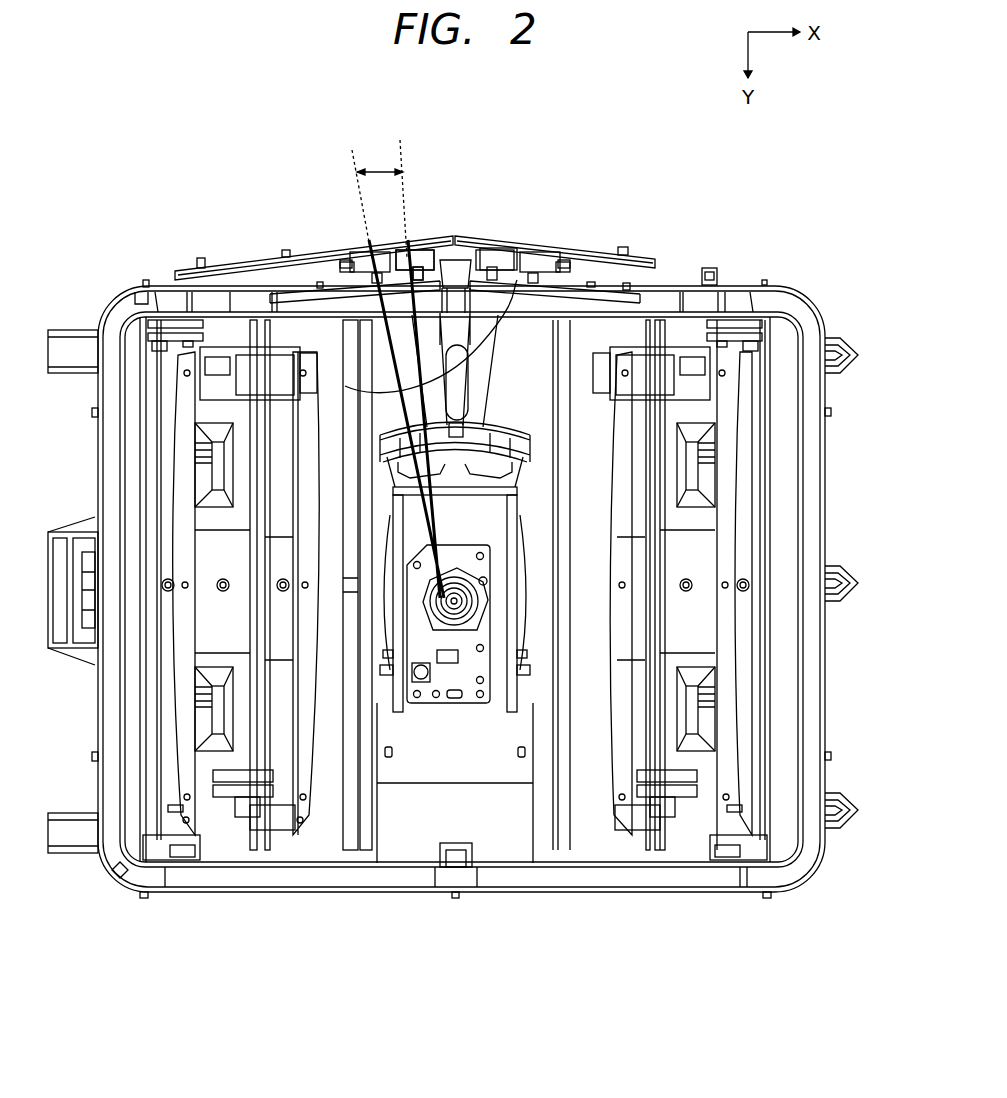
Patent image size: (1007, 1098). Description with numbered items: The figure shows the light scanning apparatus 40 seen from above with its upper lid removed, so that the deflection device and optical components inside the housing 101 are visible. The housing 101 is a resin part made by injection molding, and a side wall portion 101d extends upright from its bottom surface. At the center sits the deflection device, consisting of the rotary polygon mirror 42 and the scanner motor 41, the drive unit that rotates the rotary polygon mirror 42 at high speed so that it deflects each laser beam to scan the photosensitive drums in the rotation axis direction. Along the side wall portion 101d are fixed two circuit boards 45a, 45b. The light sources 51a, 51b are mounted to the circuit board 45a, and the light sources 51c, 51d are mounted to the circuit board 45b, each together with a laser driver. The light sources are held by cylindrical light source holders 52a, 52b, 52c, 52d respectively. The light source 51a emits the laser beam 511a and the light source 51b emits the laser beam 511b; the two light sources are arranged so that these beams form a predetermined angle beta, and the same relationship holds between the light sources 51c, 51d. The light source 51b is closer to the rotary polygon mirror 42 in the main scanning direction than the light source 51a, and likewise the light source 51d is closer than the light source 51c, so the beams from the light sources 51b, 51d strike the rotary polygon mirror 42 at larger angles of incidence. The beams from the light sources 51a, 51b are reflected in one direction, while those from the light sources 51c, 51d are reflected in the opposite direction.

The light scanning apparatus 40 is at (731, 194).
The scanner motor 41 is at (437, 622).
The rotary polygon mirror 42 is at (470, 628).
The circuit board 45a is at (192, 267).
The circuit board 45b is at (648, 253).
The light source 51a is at (375, 251).
The light source 51b is at (415, 252).
The light source 51c is at (533, 243).
The light source 51d is at (505, 300).
The laser beam 511a is at (357, 387).
The laser beam 511b is at (522, 360).
The light source holder 52a is at (400, 278).
The light source holder 52b is at (452, 253).
The light source holder 52c is at (580, 265).
The light source holder 52d is at (493, 253).
The housing 101 is at (825, 668).
The side wall portion 101d is at (742, 284).